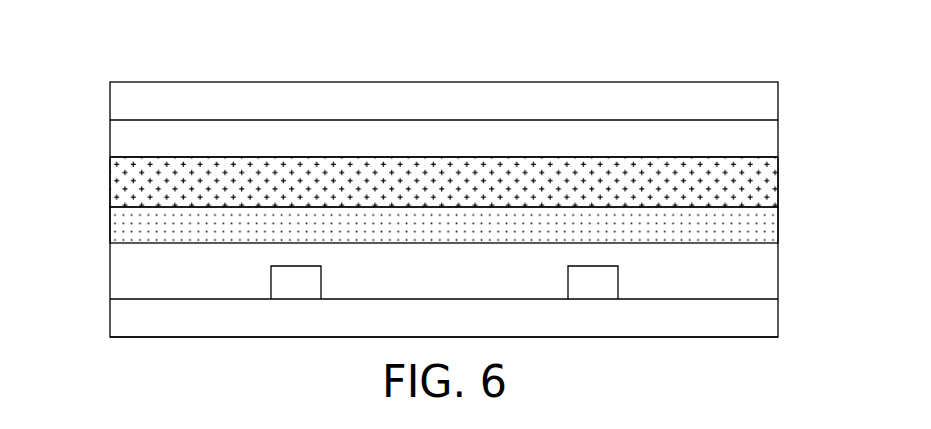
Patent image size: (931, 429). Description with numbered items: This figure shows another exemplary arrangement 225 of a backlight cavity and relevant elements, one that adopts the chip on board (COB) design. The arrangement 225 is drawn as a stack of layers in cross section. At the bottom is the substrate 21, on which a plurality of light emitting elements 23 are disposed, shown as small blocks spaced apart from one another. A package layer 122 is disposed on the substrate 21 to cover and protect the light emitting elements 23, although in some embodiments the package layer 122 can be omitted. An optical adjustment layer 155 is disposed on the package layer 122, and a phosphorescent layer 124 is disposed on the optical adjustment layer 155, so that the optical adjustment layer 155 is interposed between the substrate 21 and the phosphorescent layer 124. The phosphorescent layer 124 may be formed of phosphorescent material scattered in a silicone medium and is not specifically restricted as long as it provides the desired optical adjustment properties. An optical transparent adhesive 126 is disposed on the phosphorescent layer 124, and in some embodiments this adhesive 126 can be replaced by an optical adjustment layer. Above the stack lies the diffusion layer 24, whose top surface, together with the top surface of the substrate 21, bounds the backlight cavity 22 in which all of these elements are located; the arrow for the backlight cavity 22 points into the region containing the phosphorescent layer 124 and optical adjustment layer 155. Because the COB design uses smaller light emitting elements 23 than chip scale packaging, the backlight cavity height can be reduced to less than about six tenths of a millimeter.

The arrangement 225 is at (70, 36).
The diffusion layer 24 is at (763, 108).
The optical transparent adhesive 126 is at (763, 144).
The phosphorescent layer 124 is at (758, 189).
The optical adjustment layer 155 is at (762, 233).
The package layer 122 is at (763, 283).
The substrate 21 is at (763, 324).
The backlight cavity 22 is at (443, 200).
The light emitting elements 23 is at (287, 287).